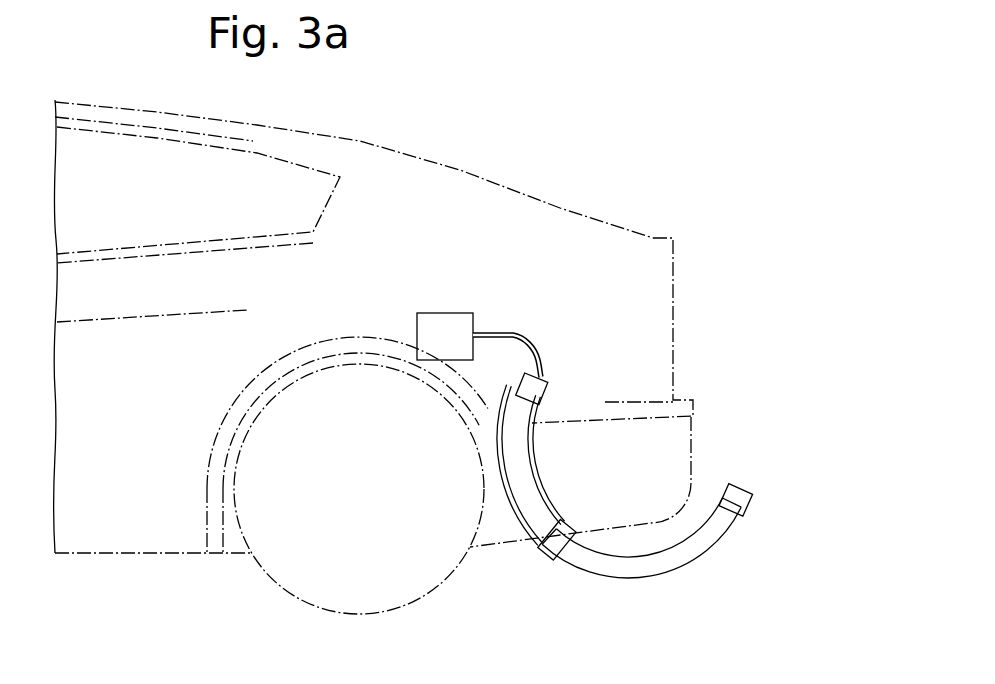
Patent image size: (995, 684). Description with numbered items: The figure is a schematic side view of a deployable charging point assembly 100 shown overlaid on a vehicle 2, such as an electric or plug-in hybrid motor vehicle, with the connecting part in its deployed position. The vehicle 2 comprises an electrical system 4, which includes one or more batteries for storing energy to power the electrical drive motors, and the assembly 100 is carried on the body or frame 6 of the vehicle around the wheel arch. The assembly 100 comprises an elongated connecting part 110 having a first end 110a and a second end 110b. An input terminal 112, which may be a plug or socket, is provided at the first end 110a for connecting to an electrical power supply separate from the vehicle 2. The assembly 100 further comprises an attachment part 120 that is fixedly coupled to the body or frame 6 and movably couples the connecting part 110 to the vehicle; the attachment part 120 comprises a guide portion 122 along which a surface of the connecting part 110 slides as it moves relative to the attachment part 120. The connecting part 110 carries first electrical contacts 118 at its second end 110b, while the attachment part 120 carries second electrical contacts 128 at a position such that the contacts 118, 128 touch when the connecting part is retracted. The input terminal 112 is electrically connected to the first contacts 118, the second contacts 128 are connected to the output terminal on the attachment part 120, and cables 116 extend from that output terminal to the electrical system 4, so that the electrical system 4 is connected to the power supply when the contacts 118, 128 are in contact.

The vehicle 2 is at (373, 330).
The electrical system 4 is at (445, 312).
The body or frame 6 is at (560, 210).
The deployable charging point assembly 100 is at (621, 495).
The connecting part 110 is at (673, 579).
The first end 110a is at (727, 540).
The second end 110b is at (550, 550).
The input terminal 112 is at (740, 497).
The cables 116 is at (533, 348).
The first electrical contacts 118 is at (550, 532).
The attachment part 120 is at (518, 465).
The guide portion 122 is at (500, 487).
The second electrical contacts 128 is at (550, 380).